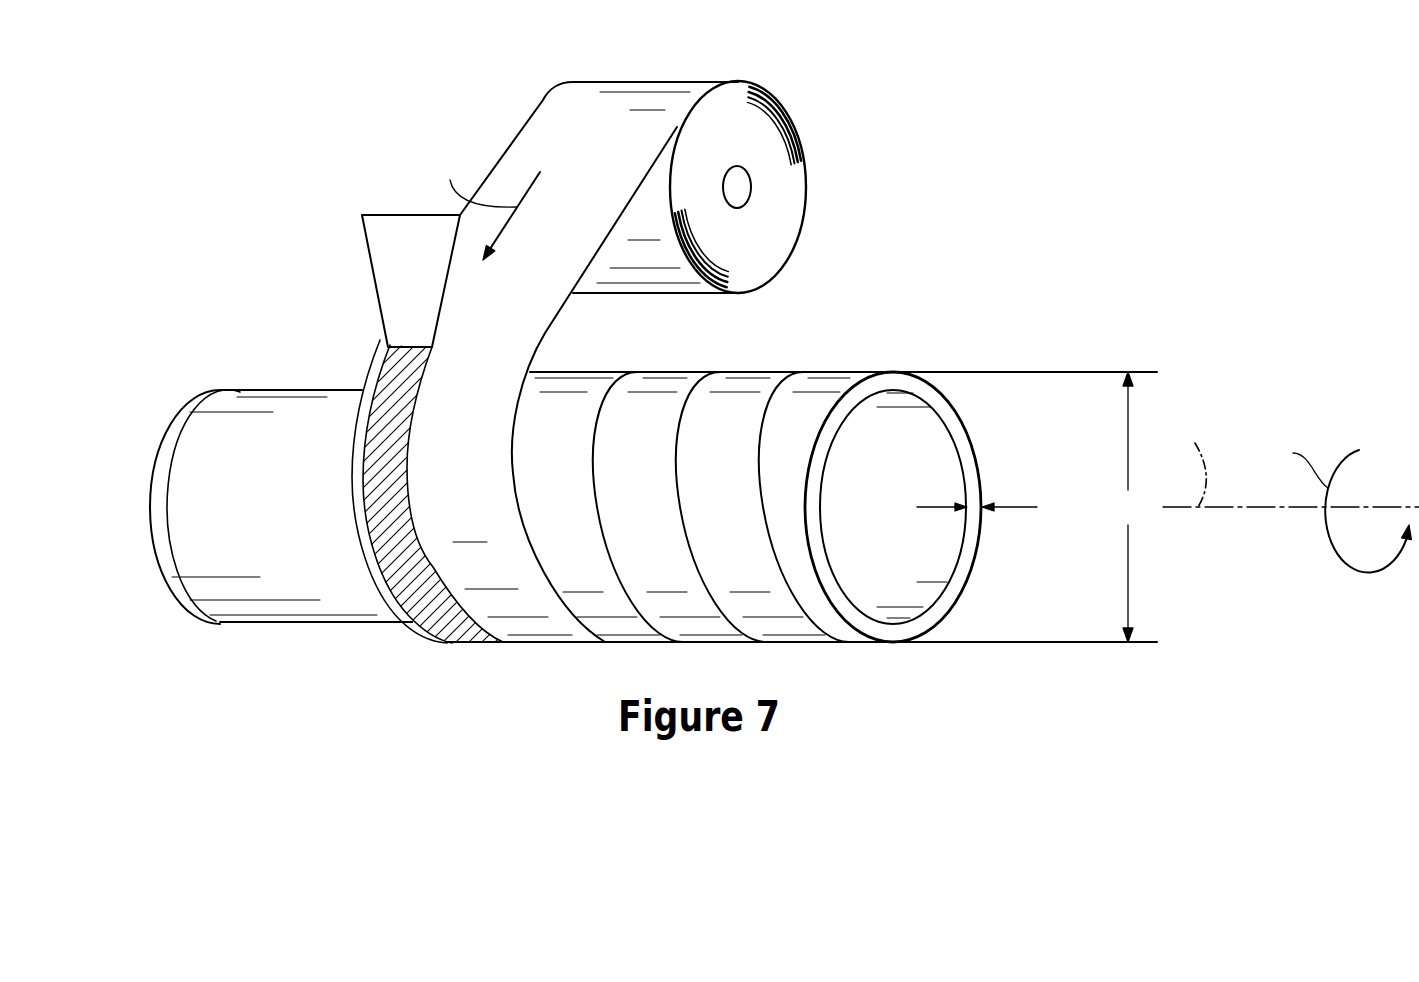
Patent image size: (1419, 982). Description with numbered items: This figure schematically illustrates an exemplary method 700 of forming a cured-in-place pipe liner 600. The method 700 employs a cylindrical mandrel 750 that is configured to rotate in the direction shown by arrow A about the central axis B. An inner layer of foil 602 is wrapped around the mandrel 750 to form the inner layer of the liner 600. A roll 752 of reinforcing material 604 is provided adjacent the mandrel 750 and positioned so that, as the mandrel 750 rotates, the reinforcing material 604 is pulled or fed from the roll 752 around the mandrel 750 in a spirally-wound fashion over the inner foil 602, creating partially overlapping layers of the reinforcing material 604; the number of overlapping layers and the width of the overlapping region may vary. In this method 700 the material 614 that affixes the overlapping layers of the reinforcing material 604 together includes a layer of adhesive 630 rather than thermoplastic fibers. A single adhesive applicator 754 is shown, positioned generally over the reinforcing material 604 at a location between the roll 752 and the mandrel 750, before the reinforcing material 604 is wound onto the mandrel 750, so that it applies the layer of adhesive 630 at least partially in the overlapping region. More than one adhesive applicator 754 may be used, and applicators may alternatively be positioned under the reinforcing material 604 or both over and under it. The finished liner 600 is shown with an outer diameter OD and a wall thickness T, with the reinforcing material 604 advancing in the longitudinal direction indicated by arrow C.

The method of forming the liner 700 is at (124, 252).
The cylindrical mandrel 750 is at (173, 443).
The inner layer of foil 602 is at (270, 623).
The adhesive applicator 754 is at (380, 245).
The roll 752 is at (763, 137).
The reinforcing material 604 is at (574, 120).
The liner 600 is at (857, 340).
The layer of adhesive 630 is at (385, 415).
The material for affixing overlapping layers 614 is at (370, 447).